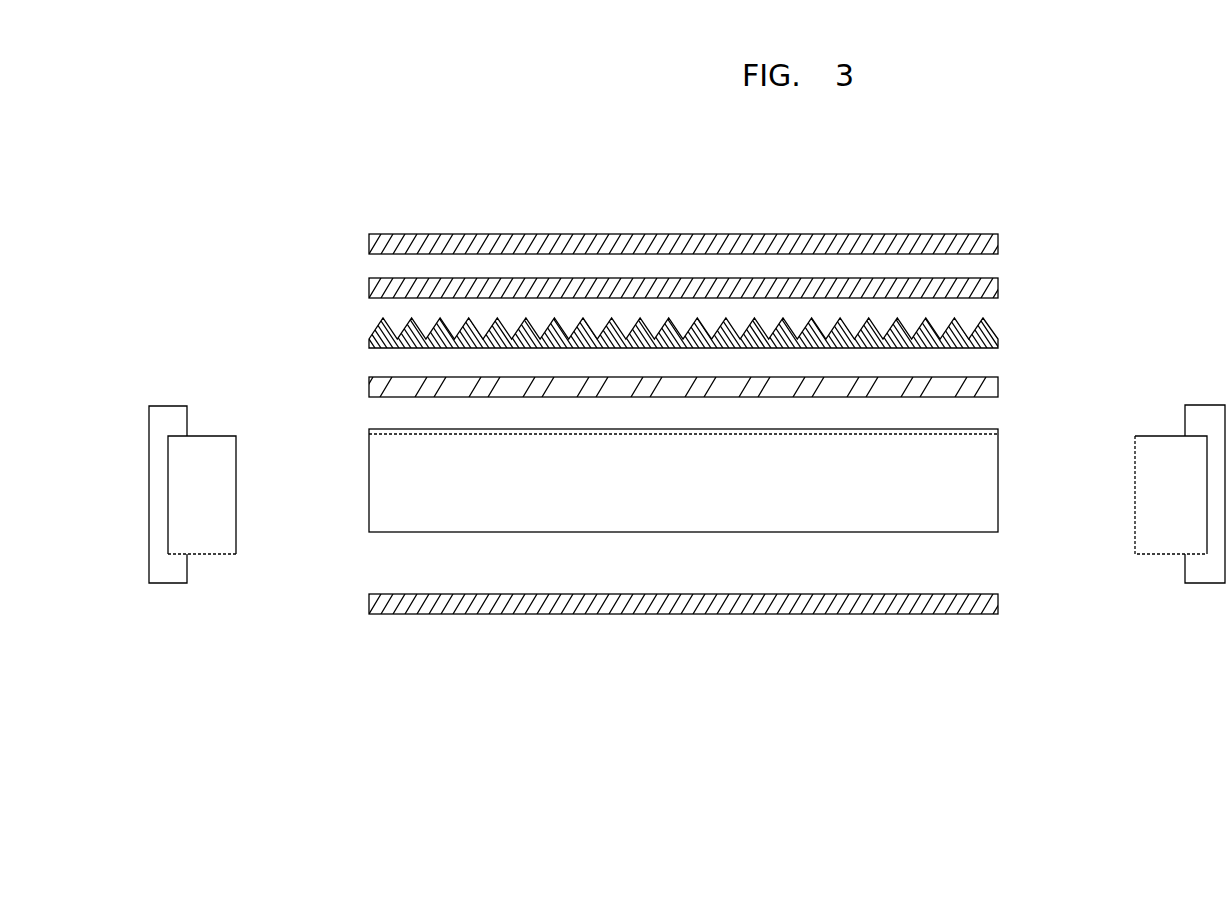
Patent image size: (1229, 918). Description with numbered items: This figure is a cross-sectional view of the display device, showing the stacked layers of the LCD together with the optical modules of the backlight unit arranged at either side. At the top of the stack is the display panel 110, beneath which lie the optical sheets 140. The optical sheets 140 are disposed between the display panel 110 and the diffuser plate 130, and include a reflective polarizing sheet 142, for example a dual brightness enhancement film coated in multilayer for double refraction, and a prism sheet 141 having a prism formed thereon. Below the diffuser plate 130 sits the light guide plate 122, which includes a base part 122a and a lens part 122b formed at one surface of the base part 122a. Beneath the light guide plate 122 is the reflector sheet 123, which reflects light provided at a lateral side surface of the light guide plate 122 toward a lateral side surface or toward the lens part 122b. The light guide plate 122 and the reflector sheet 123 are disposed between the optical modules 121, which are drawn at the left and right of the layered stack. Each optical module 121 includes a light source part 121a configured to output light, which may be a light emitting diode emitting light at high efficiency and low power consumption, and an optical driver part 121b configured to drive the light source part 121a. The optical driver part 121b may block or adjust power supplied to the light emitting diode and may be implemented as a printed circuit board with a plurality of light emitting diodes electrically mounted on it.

The display panel 110 is at (998, 244).
The optical sheets 140 is at (733, 312).
The reflective polarizing sheet 142 is at (998, 288).
The prism sheet 141 is at (998, 338).
The diffuser plate 130 is at (998, 387).
The light guide plate 122 is at (745, 476).
The lens part 122b is at (998, 431).
The base part 122a is at (998, 486).
The reflector sheet 123 is at (998, 604).
The optical module 121 is at (193, 547).
The light source part 121a is at (210, 555).
The optical driver part 121b is at (165, 583).